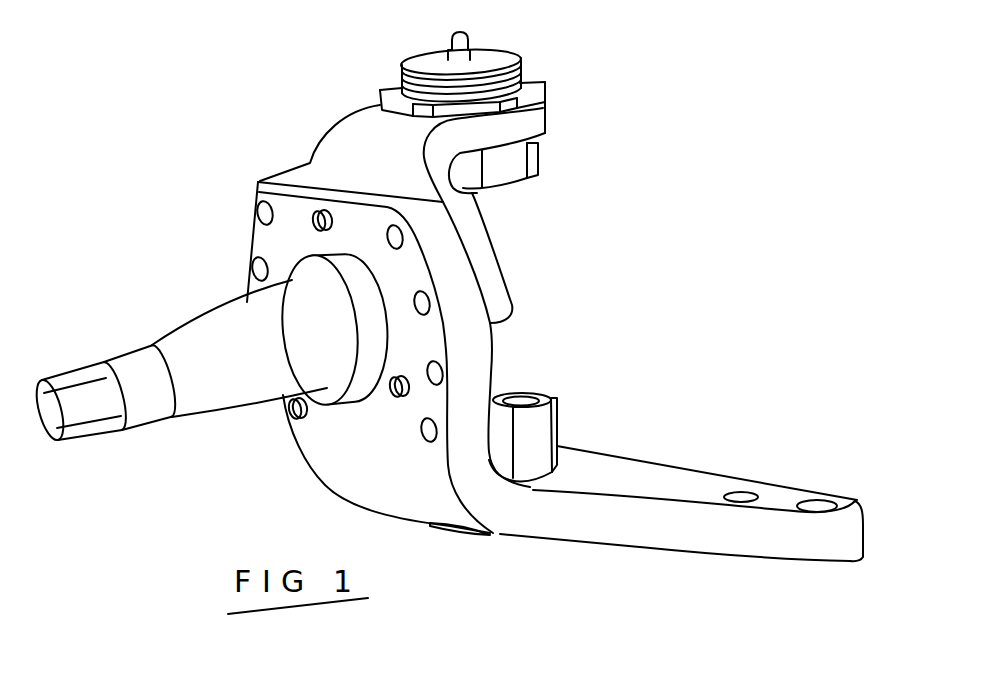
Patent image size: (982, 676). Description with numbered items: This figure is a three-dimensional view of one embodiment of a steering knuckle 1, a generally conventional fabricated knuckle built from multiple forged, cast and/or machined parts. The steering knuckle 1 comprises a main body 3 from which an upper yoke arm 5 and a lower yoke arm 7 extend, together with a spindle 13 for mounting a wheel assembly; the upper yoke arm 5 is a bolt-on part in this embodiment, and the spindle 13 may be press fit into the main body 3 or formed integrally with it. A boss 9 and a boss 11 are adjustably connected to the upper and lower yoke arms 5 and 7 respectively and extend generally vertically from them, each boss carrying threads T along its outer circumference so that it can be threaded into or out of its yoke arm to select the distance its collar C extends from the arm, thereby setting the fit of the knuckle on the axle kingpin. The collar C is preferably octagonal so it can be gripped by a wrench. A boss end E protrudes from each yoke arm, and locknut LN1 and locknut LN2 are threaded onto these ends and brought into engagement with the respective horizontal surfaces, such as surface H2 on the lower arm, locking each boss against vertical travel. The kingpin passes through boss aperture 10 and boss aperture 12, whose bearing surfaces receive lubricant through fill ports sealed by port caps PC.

The steering knuckle 1 is at (447, 324).
The main body 3 is at (458, 365).
The upper yoke arm 5 is at (479, 300).
The lower yoke arm 7 is at (513, 523).
The boss 9 is at (509, 159).
The boss aperture 10 is at (485, 189).
The boss 11 is at (569, 421).
The boss aperture 12 is at (543, 384).
The spindle 13 is at (197, 398).
The locknut LN1 is at (395, 90).
The locknut LN2 is at (446, 574).
The threads T is at (490, 75).
The boss end E is at (500, 55).
The port cap PC is at (458, 50).
The collar C is at (536, 158).
The substantially horizontal surface H2 is at (397, 542).